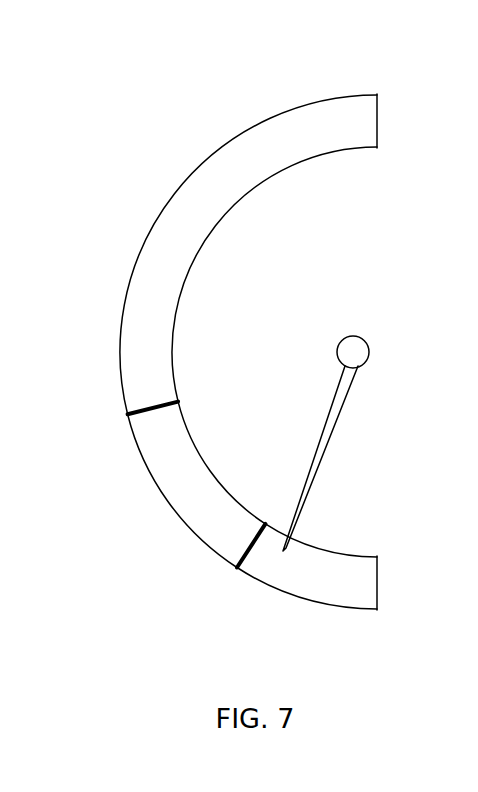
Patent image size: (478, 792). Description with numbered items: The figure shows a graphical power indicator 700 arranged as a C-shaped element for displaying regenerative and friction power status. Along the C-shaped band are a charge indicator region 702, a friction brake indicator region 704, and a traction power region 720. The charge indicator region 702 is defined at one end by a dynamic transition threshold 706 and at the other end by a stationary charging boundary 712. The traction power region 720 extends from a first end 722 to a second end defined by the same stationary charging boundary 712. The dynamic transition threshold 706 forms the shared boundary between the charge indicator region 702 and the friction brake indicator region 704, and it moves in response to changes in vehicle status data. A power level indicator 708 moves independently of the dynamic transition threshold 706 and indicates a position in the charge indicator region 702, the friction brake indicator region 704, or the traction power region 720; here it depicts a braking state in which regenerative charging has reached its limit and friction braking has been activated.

The graphical power indicator 700 is at (158, 171).
The charge indicator region 702 is at (152, 440).
The friction brake indicator region 704 is at (347, 595).
The dynamic transition threshold 706 is at (237, 553).
The power level indicator 708 is at (335, 417).
The stationary charging boundary 712 is at (153, 402).
The traction power region 720 is at (298, 125).
The first end 722 is at (378, 112).